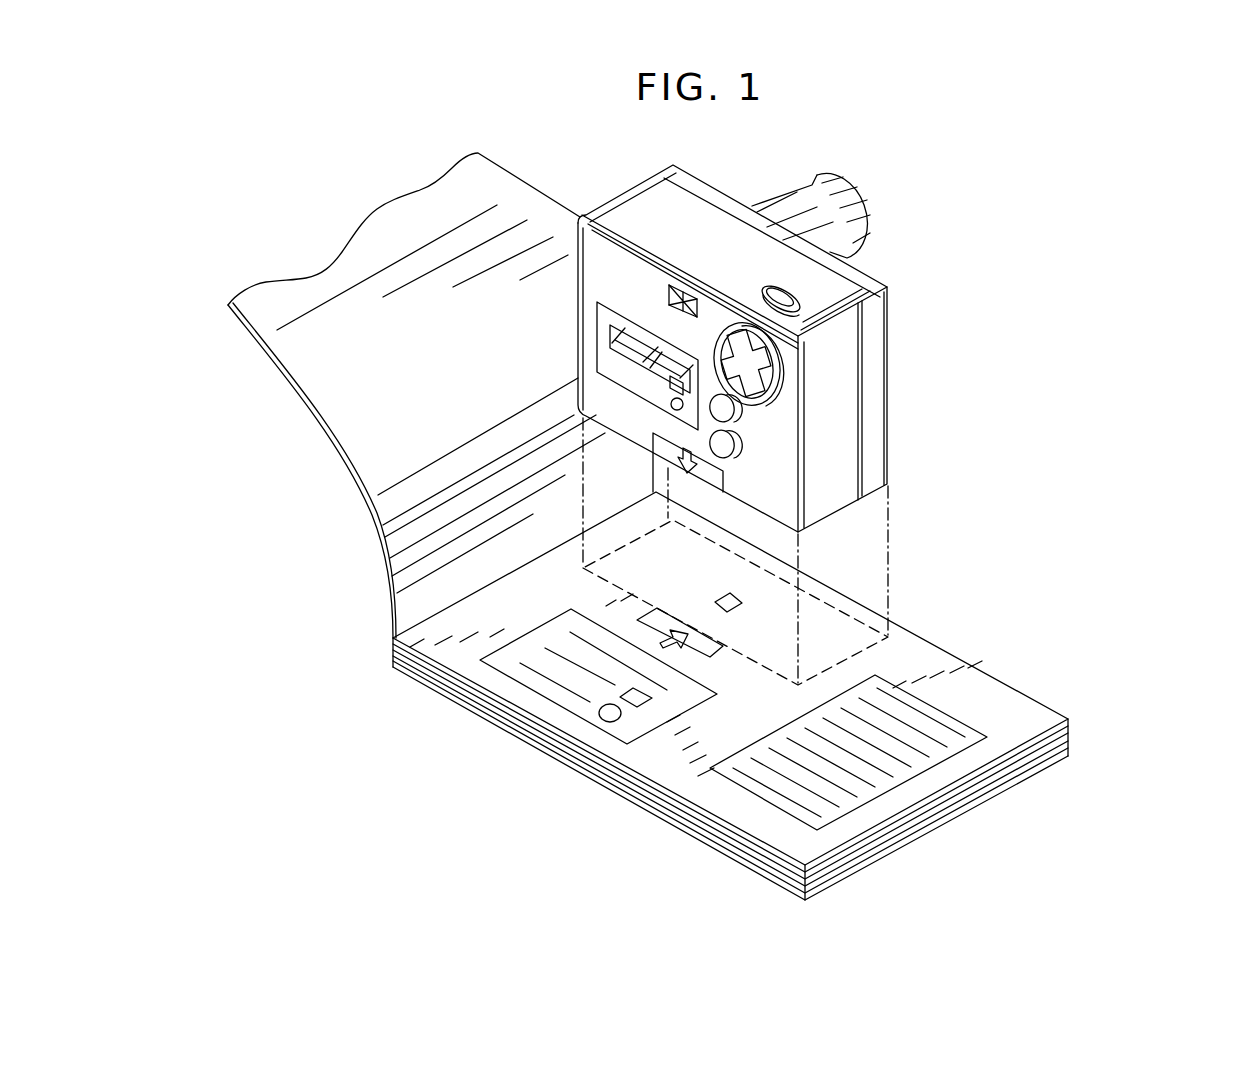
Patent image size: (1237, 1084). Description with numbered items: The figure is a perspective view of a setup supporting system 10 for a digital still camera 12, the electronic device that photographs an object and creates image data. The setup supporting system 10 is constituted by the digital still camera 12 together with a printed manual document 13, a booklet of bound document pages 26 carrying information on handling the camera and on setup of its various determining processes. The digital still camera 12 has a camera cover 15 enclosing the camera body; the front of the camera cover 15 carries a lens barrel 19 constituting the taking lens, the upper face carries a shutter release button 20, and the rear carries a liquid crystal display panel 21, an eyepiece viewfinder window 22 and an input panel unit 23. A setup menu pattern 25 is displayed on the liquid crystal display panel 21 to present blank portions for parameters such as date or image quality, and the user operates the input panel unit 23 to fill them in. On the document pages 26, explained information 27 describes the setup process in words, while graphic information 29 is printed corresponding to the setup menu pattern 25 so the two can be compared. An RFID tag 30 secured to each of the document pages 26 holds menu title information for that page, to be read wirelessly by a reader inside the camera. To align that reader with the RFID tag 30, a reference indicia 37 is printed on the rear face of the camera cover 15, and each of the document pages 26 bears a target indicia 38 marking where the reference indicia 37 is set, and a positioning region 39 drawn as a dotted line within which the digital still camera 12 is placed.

The setup supporting system 10 is at (695, 526).
The digital still camera 12 is at (772, 348).
The printed manual document 13 is at (695, 526).
The camera cover 15 is at (878, 323).
The lens barrel 19 is at (870, 240).
The shutter release button 20 is at (766, 290).
The liquid crystal display panel 21 is at (588, 367).
The eyepiece viewfinder window 22 is at (683, 285).
The input panel unit 23 is at (755, 402).
The setup menu pattern 25 is at (601, 365).
The document pages 26 is at (1066, 710).
The explained information 27 is at (937, 717).
The graphic information 29 is at (563, 697).
The RFID tag 30 is at (742, 602).
The reference indicia 37 is at (670, 464).
The target indicia 38 is at (690, 637).
The positioning region 39 is at (600, 586).